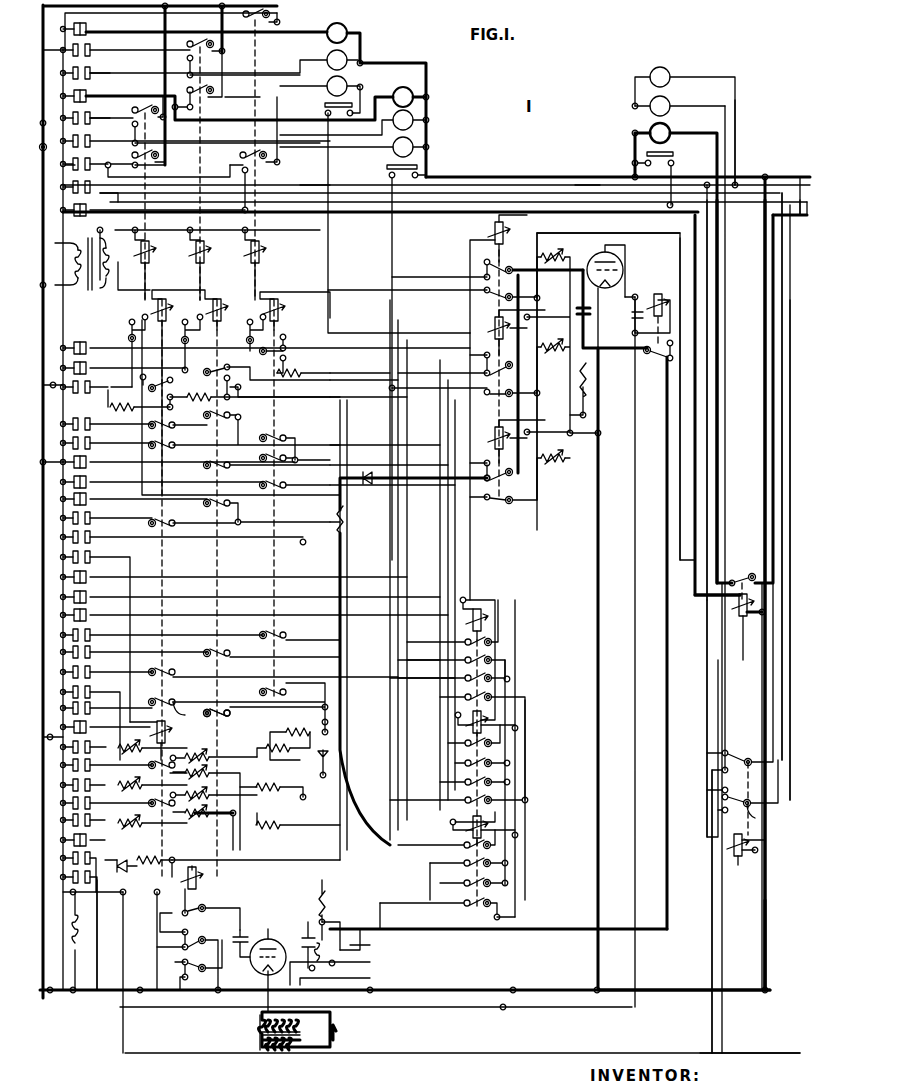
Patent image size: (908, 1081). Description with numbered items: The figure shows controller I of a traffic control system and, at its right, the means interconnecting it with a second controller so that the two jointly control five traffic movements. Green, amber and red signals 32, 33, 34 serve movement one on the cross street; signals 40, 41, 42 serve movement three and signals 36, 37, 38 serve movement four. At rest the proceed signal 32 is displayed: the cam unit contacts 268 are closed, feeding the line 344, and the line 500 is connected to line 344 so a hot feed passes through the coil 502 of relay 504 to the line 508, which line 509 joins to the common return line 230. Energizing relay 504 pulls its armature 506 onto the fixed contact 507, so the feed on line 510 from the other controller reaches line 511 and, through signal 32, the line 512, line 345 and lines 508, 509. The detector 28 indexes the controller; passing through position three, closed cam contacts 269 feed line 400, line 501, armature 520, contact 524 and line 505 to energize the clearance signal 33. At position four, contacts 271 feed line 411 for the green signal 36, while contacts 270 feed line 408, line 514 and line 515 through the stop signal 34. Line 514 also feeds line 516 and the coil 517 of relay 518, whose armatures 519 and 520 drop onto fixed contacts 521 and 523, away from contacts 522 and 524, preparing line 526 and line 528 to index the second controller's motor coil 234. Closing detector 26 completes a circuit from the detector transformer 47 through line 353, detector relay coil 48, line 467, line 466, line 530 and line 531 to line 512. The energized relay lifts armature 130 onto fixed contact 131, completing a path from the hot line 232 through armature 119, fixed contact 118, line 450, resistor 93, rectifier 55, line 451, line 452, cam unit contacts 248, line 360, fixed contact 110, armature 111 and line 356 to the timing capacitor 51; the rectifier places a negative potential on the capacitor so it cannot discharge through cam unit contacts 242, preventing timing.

The stop signal 42 is at (329, 26).
The clearance signal 41 is at (327, 56).
The proceed signal 40 is at (327, 86).
The stop signal 38 is at (413, 92).
The clearance signal 37 is at (413, 117).
The green signal 36 is at (413, 144).
The detector 28 is at (390, 164).
The stop signal 34 is at (667, 69).
The clearance signal 33 is at (669, 102).
The proceed signal 32 is at (670, 130).
The line 512 is at (635, 146).
The detector 26 is at (670, 155).
The line 515 is at (736, 120).
The line 466 is at (798, 177).
The line 345 is at (540, 175).
The line 514 is at (580, 183).
The line 400 is at (303, 184).
The line 530 is at (289, 212).
The line 500 is at (357, 212).
The line 531 is at (668, 205).
The contacts 271 is at (95, 140).
The contacts 270 is at (95, 162).
The line 408 is at (183, 180).
The line 411 is at (236, 118).
The cam contacts 269 is at (86, 186).
The cam unit contacts 268 is at (82, 213).
The line 344 is at (194, 212).
The line 353 is at (126, 290).
The detector transformer 47 is at (100, 290).
The detector relay coil 48 is at (152, 303).
The line 467 is at (150, 345).
The line 510 is at (760, 304).
The line 511 is at (718, 322).
The line 501 is at (775, 272).
The line 508 is at (760, 392).
The line 526 is at (762, 476).
The armature 506 is at (742, 572).
The fixed contact 507 is at (728, 600).
The coil 502 is at (732, 610).
The relay 504 is at (740, 636).
The line 516 is at (700, 707).
The line 505 is at (722, 673).
The fixed contact point 524 is at (722, 750).
The armature 520 is at (733, 756).
The fixed contact point 523 is at (722, 768).
The fixed contact point 522 is at (722, 789).
The fixed contact point 521 is at (722, 810).
The armature 519 is at (756, 819).
The coil 517 is at (762, 845).
The relay 518 is at (738, 862).
The line 509 is at (766, 925).
The common return line 230 is at (668, 993).
The line 528 is at (772, 1053).
The line 452 is at (130, 722).
The fixed contact 131 is at (173, 700).
The armature 130 is at (210, 710).
The line 451 is at (168, 732).
The cam unit contacts 248 is at (92, 740).
The cam unit contacts 242 is at (130, 798).
The rectifier 55 is at (365, 818).
The timing capacitor 51 is at (240, 935).
The resistor 93 is at (320, 912).
The line 450 is at (370, 945).
The armature 119 is at (370, 963).
The fixed contact 118 is at (370, 980).
The armature 111 is at (175, 962).
The fixed contact 110 is at (185, 988).
The line 356 is at (262, 990).
The hot line 232 is at (153, 995).
The motor coil 234 is at (88, 992).
The line 360 is at (63, 995).